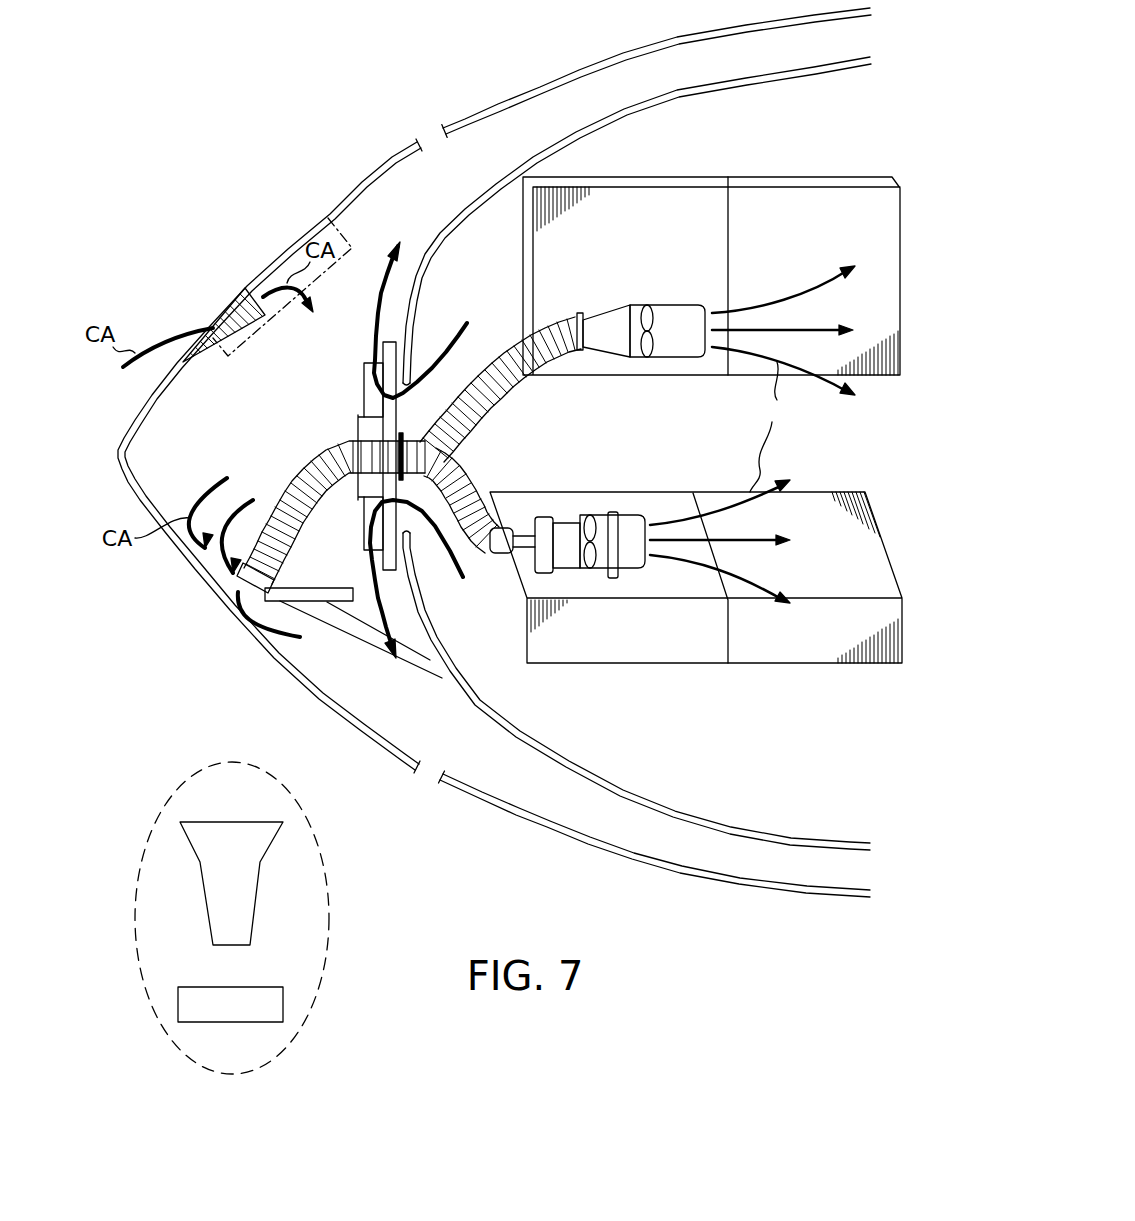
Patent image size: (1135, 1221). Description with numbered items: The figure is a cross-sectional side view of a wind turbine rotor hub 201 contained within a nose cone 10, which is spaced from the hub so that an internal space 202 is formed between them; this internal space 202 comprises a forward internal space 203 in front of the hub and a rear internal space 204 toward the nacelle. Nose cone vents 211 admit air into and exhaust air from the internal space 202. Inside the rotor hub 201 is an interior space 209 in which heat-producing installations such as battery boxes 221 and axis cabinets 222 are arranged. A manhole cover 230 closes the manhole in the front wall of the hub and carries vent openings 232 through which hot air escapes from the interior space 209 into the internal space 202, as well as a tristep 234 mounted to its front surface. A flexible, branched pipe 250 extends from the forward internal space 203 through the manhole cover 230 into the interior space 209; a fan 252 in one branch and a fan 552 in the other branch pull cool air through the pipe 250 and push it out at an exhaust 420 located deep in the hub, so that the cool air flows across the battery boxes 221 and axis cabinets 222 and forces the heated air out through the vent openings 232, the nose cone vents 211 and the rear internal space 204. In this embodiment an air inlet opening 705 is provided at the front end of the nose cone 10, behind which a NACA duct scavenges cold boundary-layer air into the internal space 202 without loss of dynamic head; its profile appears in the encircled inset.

The nose cone 10 is at (686, 877).
The rotor hub 201 is at (778, 70).
The internal space 202 is at (412, 200).
The forward internal space 203 is at (152, 493).
The rear internal space 204 is at (812, 52).
The interior space 209 is at (656, 441).
The nose cone vents 211 is at (430, 140).
The battery box 221 is at (602, 232).
The axis cabinet 222 is at (832, 234).
The manhole cover 230 is at (383, 350).
The vent openings 232 is at (364, 387).
The tristep 234 is at (358, 430).
The pipe 250 is at (300, 490).
The fan 252 is at (583, 513).
The pipe exhaust 420 is at (650, 568).
The fan 552 is at (650, 303).
The air inlet opening 705 is at (150, 334).